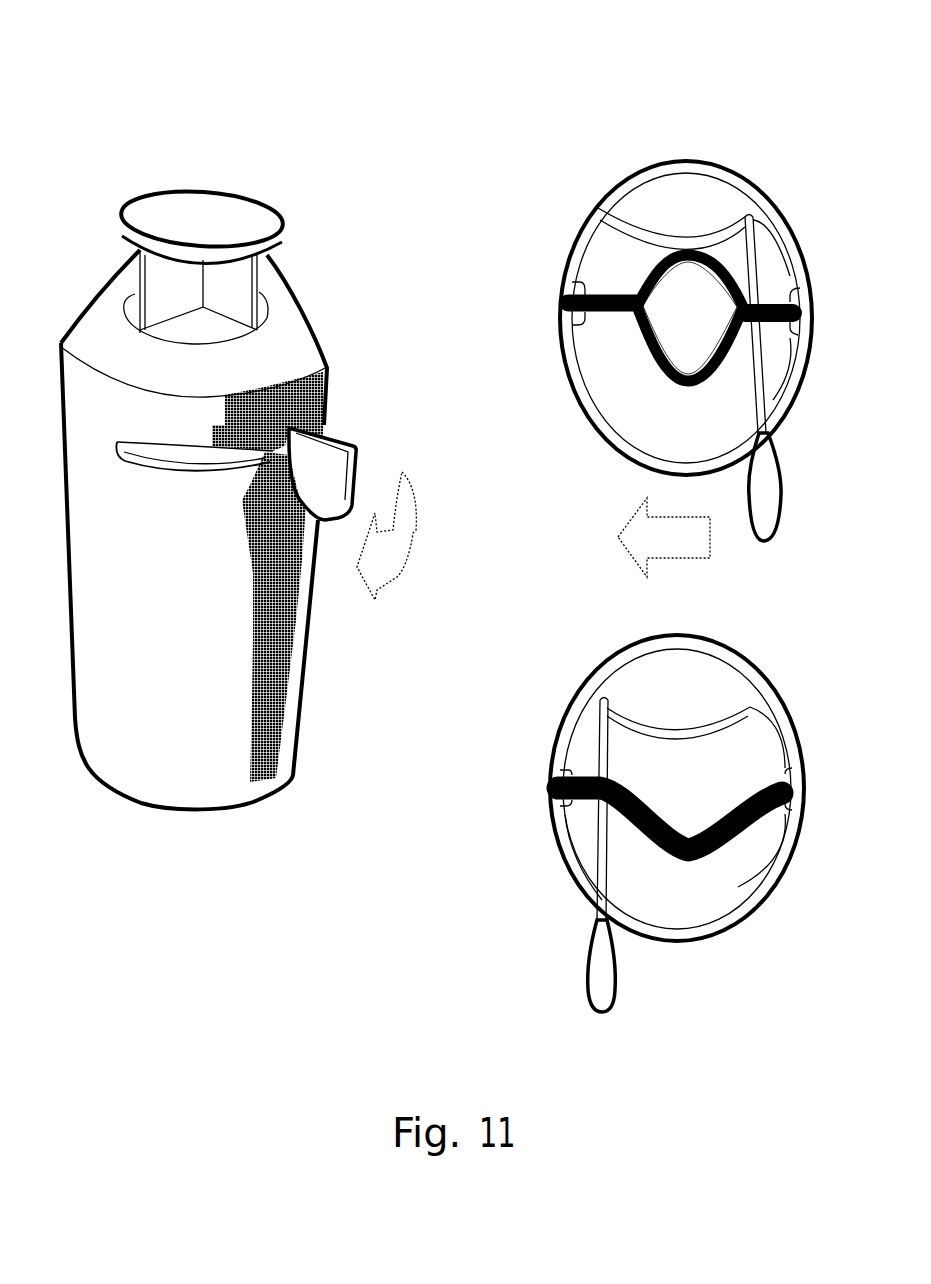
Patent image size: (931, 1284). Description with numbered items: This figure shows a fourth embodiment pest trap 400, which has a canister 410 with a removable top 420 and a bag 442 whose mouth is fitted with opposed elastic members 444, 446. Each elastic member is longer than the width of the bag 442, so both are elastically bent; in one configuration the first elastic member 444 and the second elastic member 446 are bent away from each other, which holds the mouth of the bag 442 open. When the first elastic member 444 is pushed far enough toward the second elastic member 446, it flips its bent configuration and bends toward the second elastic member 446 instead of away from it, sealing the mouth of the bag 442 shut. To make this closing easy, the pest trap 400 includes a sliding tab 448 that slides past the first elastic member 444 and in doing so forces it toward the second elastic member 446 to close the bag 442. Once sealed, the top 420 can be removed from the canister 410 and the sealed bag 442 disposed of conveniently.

The pest trap 400 is at (130, 95).
The canister 410 is at (247, 735).
The top 420 is at (287, 338).
The bag 442 is at (600, 356).
The first elastic member 444 is at (645, 265).
The second elastic member 446 is at (650, 361).
The sliding tab 448 is at (325, 458).